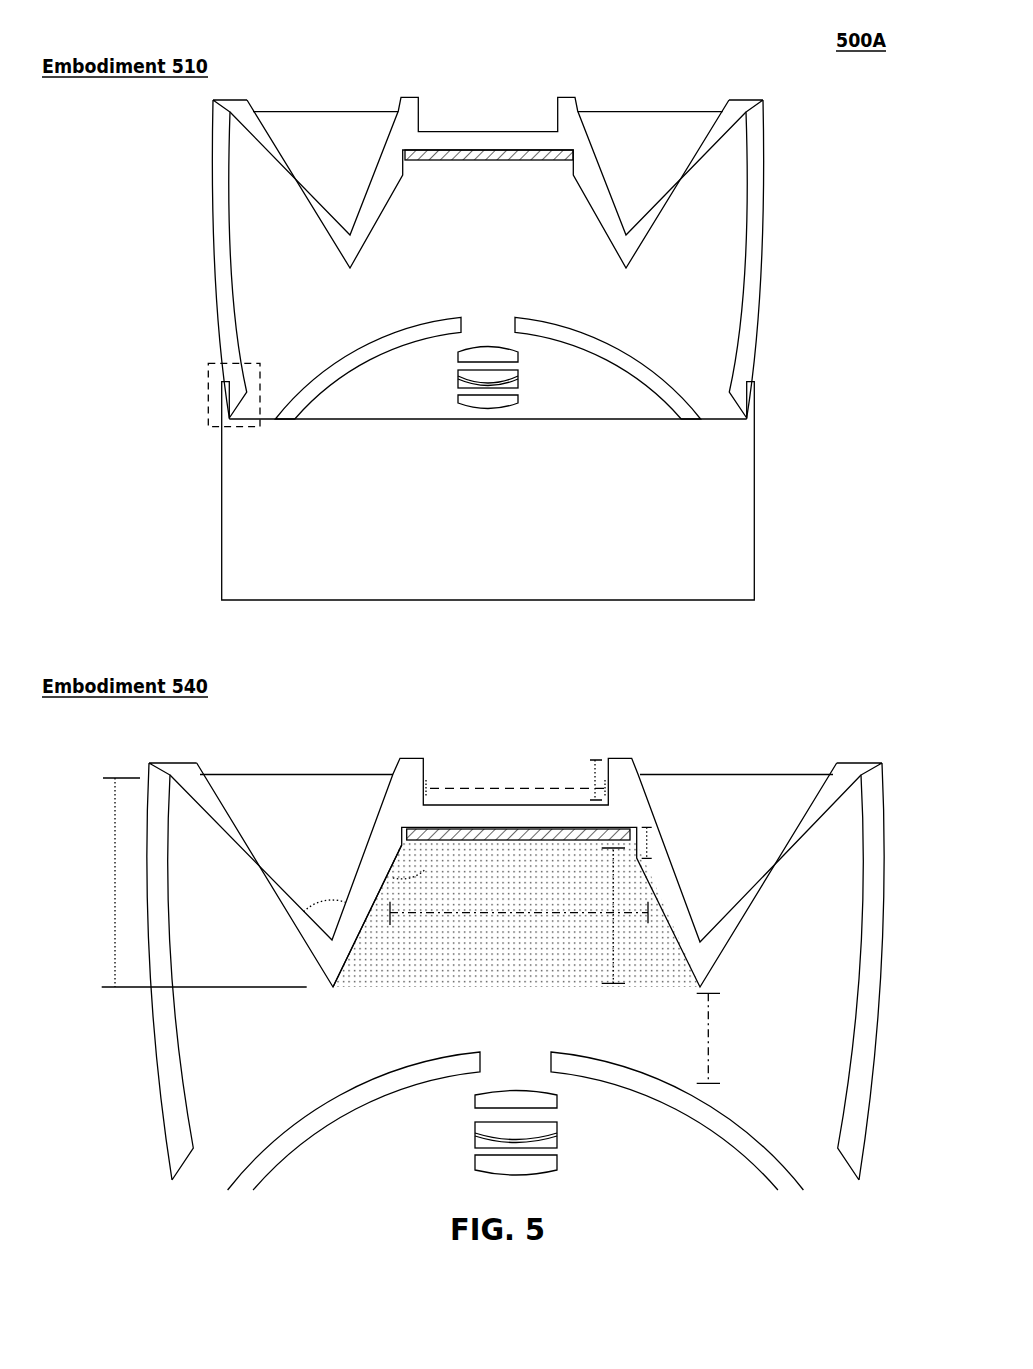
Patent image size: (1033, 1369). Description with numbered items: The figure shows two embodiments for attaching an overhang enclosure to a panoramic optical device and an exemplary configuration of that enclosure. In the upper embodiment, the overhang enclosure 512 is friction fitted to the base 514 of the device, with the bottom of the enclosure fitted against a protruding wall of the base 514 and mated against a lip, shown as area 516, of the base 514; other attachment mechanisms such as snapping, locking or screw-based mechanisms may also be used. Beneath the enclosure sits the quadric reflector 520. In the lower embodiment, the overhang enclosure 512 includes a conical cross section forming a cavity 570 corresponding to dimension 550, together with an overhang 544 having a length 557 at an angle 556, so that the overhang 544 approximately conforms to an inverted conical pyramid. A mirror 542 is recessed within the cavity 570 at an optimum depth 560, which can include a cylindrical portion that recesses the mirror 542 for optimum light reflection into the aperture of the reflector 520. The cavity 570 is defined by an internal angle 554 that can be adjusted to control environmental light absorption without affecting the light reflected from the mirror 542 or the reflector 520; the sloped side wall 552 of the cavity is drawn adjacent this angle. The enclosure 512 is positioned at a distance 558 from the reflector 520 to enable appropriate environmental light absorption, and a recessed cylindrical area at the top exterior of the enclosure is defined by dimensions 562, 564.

The overhang enclosure 512 is at (212, 232).
The base 514 is at (220, 512).
The lip area 516 is at (208, 382).
The reflector 520 is at (382, 332).
The mirror 542 is at (517, 843).
The overhang 544 is at (240, 838).
The dimension 550 is at (613, 947).
The cavity side wall 552 is at (398, 912).
The internal angle 554 is at (418, 862).
The angle 556 is at (320, 900).
The length 557 is at (115, 940).
The distance 558 is at (713, 1045).
The depth 560 is at (650, 842).
The dimension 562 is at (595, 770).
The dimension 564 is at (447, 788).
The cavity 570 is at (516, 915).